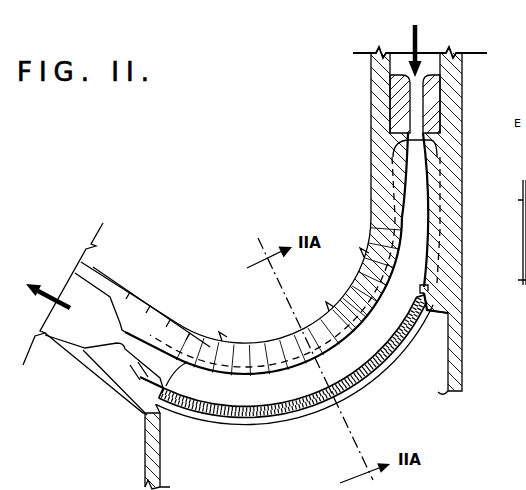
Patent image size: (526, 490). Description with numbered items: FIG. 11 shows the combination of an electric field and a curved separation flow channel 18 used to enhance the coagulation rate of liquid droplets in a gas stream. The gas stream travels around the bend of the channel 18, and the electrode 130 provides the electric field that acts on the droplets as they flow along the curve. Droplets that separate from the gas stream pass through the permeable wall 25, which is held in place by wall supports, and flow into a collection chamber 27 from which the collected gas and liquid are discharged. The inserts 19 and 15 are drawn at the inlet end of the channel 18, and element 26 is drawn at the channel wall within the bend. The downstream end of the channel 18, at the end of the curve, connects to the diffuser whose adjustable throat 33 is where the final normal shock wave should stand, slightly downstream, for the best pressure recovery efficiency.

The left sleeve insert 19 is at (414, 90).
The right sleeve insert 15 is at (428, 104).
The electrode 130 is at (387, 173).
The channel wall 26 is at (256, 372).
The channel 18 is at (378, 340).
The permeable wall 25 is at (297, 411).
The collection chamber 27 is at (230, 464).
The throat 33 is at (120, 337).